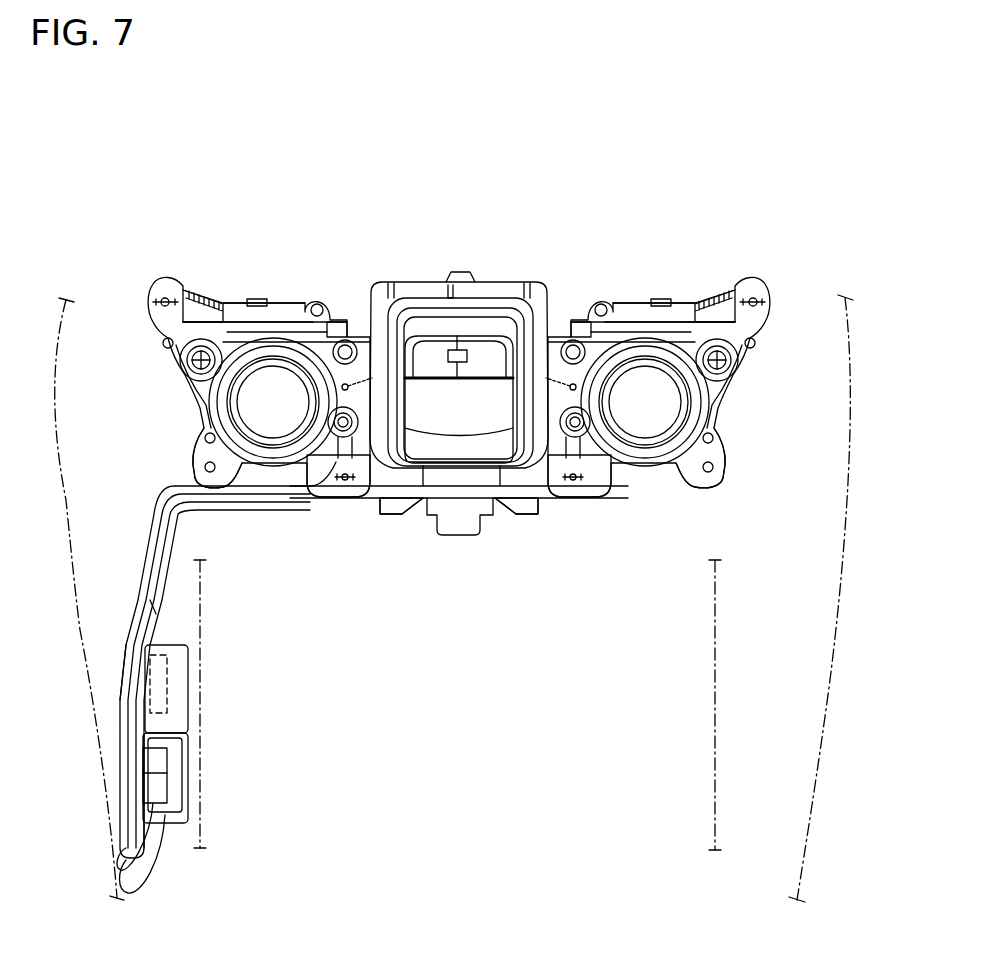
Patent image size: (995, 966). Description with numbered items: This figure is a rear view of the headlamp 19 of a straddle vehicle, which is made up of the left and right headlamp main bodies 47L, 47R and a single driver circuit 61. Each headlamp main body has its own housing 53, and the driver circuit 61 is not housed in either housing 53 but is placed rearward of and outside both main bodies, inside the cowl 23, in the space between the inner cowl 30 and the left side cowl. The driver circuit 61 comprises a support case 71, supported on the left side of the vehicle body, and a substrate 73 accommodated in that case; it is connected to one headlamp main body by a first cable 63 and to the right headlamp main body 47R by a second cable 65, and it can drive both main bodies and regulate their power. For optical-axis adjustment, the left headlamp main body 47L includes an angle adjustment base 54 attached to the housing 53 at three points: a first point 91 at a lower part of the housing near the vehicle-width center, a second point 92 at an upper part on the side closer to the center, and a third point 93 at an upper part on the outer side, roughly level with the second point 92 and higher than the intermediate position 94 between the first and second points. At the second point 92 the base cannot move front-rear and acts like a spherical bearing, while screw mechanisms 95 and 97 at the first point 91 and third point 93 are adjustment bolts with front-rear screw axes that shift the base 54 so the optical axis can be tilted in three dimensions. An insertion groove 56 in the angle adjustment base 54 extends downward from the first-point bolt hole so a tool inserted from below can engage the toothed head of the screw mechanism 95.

The headlamp 19 is at (801, 158).
The left headlamp main body 47L is at (272, 278).
The right headlamp main body 47R is at (655, 279).
The housing 53 is at (295, 300).
The second point 92 is at (349, 342).
The intermediate position 94 is at (396, 306).
The screw mechanism 97 is at (180, 350).
The third point 93 is at (198, 383).
The angle adjustment base 54 is at (203, 478).
The screw mechanism 95 is at (340, 481).
The first point 91 is at (378, 502).
The insertion groove 56 is at (347, 476).
The first cable 63 is at (161, 613).
The second cable 65 is at (146, 604).
The inner cowl 30 is at (200, 644).
The driver circuit 61 is at (199, 699).
The substrate 73 is at (188, 720).
The support case 71 is at (172, 822).
The cowl 23 is at (107, 779).